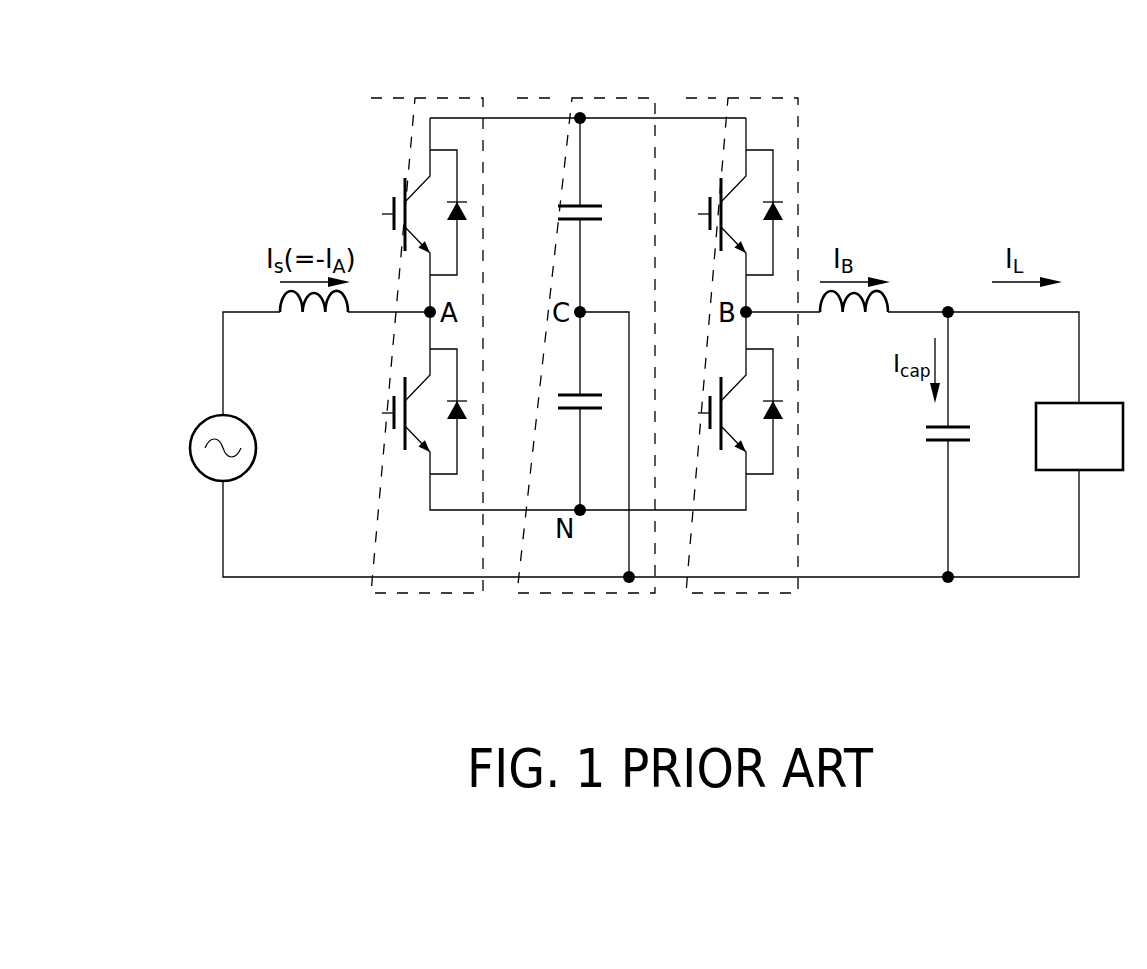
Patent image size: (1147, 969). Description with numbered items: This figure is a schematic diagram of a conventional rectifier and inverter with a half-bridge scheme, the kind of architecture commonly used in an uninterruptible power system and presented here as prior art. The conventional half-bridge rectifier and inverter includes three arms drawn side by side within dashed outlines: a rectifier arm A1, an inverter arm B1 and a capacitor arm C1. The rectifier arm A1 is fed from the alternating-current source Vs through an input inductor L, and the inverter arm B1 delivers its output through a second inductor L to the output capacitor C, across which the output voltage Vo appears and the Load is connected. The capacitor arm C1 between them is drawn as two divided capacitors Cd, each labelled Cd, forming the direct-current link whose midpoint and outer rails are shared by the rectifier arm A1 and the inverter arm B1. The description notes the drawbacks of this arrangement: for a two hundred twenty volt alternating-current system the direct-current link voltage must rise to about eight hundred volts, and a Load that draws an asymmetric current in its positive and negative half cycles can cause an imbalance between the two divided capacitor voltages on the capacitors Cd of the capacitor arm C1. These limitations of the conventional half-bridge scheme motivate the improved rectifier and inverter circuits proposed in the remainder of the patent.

The rectifier arm A1 is at (407, 97).
The inverter arm B1 is at (720, 97).
The capacitor arm C1 is at (586, 311).
The DC-link capacitor Cd is at (564, 303).
The inductor L is at (584, 320).
The output capacitor C is at (934, 441).
The AC voltage source Vs is at (202, 449).
The output voltage Vo is at (1002, 438).
The load Load is at (1079, 436).